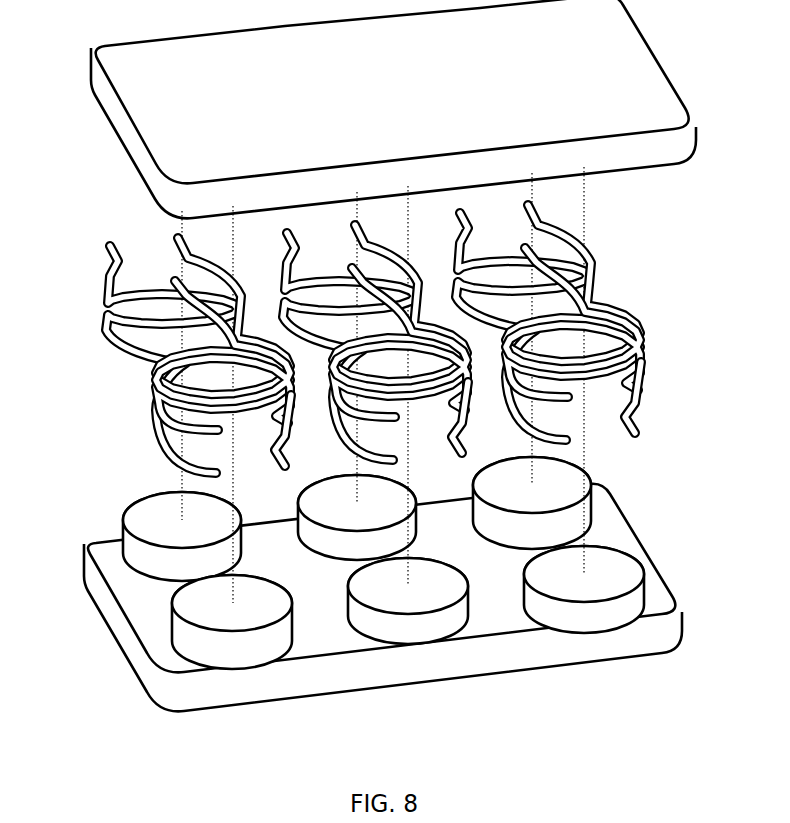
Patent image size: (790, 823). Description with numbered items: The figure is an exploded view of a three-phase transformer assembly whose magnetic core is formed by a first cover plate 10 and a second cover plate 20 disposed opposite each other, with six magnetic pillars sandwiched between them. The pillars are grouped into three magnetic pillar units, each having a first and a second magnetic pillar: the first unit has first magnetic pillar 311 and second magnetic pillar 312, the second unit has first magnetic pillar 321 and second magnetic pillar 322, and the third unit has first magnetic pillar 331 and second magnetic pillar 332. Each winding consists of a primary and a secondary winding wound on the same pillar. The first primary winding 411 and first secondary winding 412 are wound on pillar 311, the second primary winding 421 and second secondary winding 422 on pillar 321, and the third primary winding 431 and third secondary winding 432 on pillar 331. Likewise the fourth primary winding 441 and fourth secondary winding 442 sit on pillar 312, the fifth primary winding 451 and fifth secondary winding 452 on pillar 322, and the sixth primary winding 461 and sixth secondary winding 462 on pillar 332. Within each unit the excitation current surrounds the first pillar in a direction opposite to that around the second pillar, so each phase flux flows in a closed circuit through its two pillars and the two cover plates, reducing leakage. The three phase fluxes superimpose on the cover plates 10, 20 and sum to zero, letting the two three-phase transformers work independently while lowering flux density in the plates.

The first cover plate 10 is at (640, 640).
The second cover plate 20 is at (630, 63).
The first magnetic pillar 311 is at (243, 658).
The second magnetic pillar 312 is at (223, 548).
The first magnetic pillar 321 is at (403, 637).
The second magnetic pillar 322 is at (420, 523).
The first magnetic pillar 331 is at (592, 622).
The second magnetic pillar 332 is at (593, 477).
The first primary winding 411 is at (152, 459).
The first secondary winding 412 is at (152, 411).
The second primary winding 421 is at (342, 429).
The second secondary winding 422 is at (333, 391).
The third primary winding 431 is at (642, 421).
The third secondary winding 432 is at (642, 337).
The fourth primary winding 441 is at (108, 366).
The fourth secondary winding 442 is at (115, 300).
The fifth primary winding 451 is at (417, 301).
The fifth secondary winding 452 is at (365, 223).
The sixth primary winding 461 is at (593, 294).
The sixth secondary winding 462 is at (593, 242).